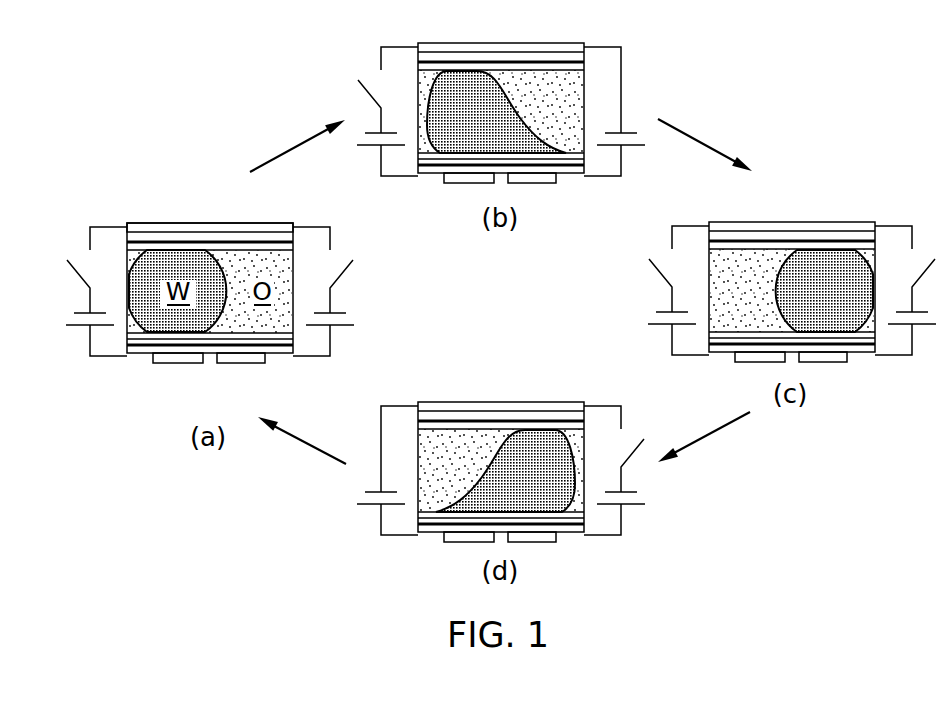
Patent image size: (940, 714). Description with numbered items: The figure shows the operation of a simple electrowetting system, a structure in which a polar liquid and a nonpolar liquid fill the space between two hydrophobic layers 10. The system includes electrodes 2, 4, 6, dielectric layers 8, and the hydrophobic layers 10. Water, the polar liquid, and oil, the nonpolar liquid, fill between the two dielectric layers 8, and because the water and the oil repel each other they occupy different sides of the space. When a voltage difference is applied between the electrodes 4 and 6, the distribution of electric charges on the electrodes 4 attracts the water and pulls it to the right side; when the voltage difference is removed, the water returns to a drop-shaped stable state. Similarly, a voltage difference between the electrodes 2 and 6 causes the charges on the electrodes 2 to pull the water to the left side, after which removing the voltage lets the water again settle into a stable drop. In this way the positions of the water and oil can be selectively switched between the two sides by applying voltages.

The electrode 2 is at (178, 361).
The electrode 4 is at (241, 361).
The electrode 6 is at (142, 228).
The dielectric layer 8 is at (180, 239).
The hydrophobic layer 10 is at (218, 248).